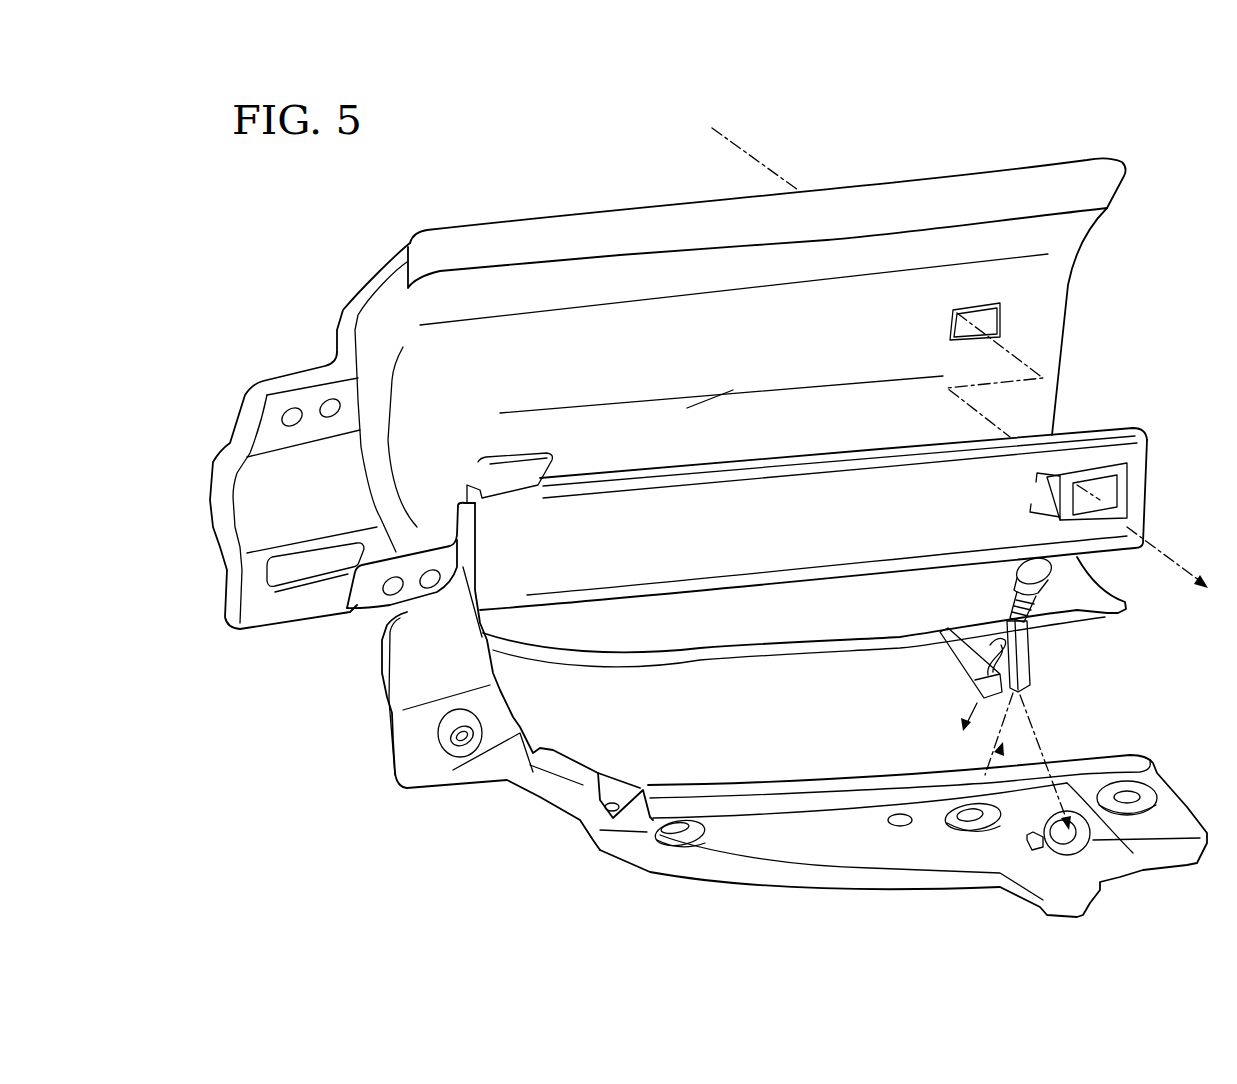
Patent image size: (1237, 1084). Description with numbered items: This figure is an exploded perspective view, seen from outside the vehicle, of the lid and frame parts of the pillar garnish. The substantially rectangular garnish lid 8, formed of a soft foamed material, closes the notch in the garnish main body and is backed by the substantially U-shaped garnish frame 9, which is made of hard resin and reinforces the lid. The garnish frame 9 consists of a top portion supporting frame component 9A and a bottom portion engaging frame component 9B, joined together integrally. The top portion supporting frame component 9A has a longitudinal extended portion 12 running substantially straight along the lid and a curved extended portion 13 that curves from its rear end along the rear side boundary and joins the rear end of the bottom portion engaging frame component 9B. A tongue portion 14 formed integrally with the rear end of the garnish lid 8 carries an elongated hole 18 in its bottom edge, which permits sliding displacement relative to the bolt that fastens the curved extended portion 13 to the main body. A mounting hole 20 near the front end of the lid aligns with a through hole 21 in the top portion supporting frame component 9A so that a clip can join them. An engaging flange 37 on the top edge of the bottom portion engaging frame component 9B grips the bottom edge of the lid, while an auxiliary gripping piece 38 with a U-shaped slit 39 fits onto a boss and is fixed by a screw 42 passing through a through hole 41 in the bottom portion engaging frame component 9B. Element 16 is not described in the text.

The garnish lid 8 is at (995, 170).
The mounting hole 20 is at (1002, 318).
The garnish frame 9 is at (837, 657).
The top portion supporting frame component 9A is at (1095, 427).
The bottom portion engaging frame component 9B is at (902, 831).
The through hole 21 is at (1122, 493).
The longitudinal extended portion 12 is at (720, 553).
The tongue portion 14 is at (275, 532).
The elongated hole 18 is at (278, 590).
The mounting flange 16 is at (356, 618).
The curved extended portion 13 is at (437, 685).
The engaging flange 37 is at (797, 788).
The screw 42 is at (1043, 573).
The auxiliary gripping piece 38 is at (1040, 648).
The slit 39 is at (988, 667).
The through hole 41 is at (1070, 840).